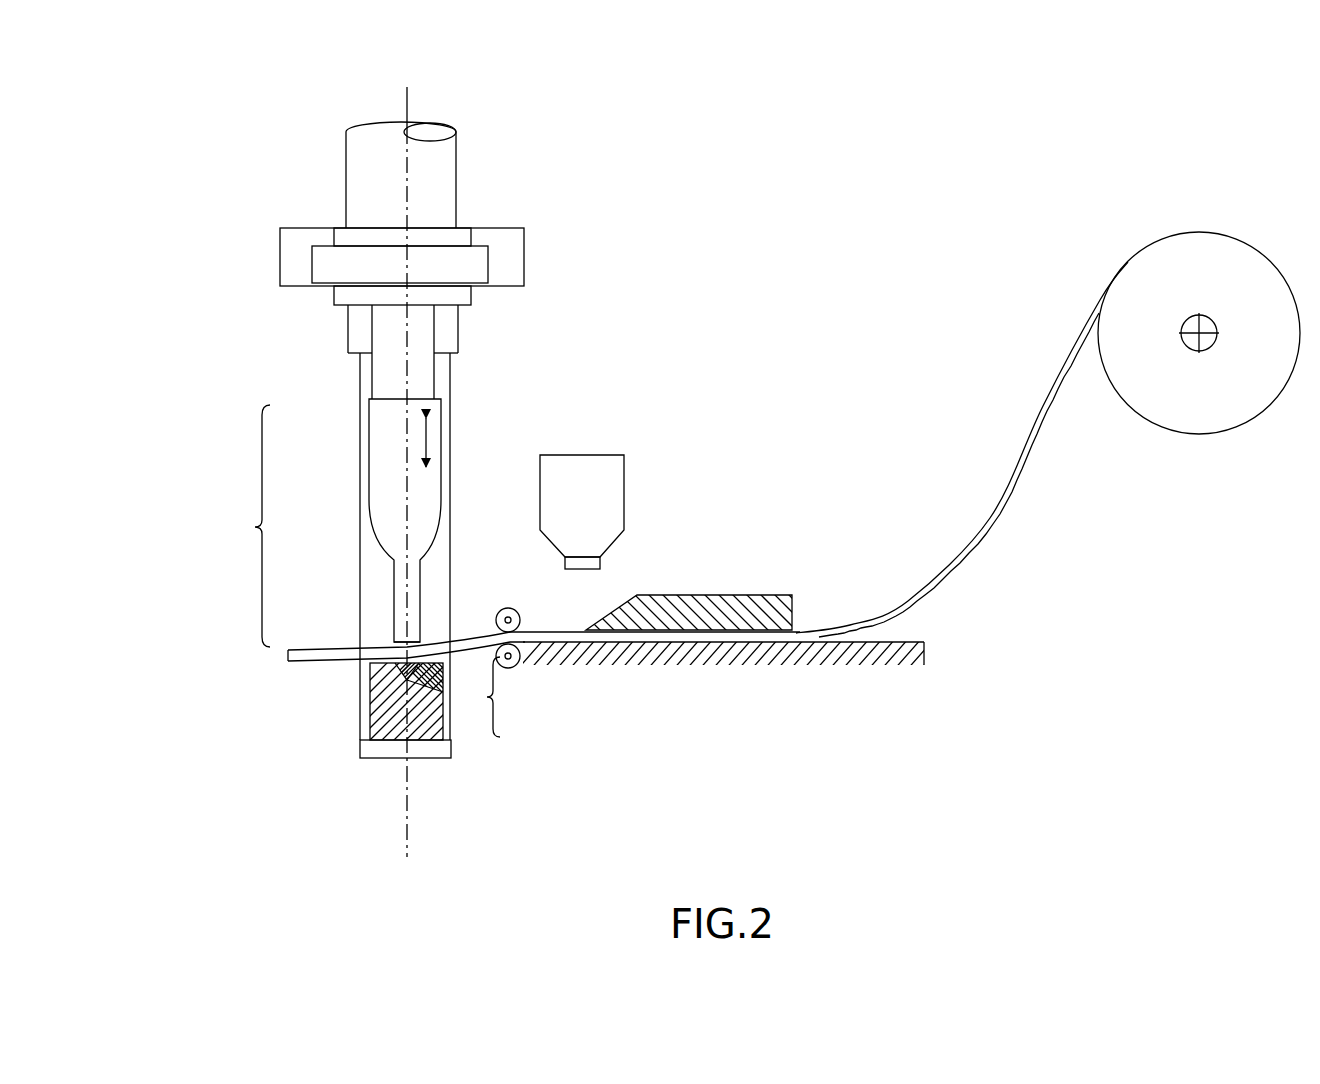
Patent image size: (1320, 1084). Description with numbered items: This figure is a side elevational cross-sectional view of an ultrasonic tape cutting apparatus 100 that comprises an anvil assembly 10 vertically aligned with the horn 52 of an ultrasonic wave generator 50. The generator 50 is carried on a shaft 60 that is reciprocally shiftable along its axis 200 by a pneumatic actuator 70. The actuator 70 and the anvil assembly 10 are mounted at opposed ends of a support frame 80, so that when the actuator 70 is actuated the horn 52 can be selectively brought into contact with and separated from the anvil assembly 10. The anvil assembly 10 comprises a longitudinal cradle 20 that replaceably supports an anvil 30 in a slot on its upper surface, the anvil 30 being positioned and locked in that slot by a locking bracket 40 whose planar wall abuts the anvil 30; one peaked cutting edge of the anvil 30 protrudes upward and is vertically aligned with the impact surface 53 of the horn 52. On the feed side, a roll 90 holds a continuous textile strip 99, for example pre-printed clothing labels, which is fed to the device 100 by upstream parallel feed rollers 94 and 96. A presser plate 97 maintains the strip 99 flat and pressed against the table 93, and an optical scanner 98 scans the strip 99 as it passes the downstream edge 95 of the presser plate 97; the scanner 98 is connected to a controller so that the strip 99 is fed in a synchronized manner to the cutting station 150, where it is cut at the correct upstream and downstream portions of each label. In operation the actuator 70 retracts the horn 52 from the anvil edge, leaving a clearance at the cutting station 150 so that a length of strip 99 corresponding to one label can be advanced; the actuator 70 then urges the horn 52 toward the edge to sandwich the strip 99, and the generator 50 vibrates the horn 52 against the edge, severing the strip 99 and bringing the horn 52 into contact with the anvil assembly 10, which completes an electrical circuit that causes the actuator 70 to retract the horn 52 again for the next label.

The ultrasonic tape cutting apparatus 100 is at (718, 183).
The pneumatic actuator 70 is at (443, 167).
The support frame 80 is at (517, 255).
The axis 200 is at (403, 320).
The shaft 60 is at (423, 372).
The ultrasonic wave generator 50 is at (247, 526).
The horn 52 is at (396, 568).
The impact surface 53 is at (412, 650).
The cutting station 150 is at (348, 633).
The cradle 20 is at (377, 730).
The anvil 30 is at (372, 673).
The locking bracket 40 is at (445, 680).
The anvil assembly 10 is at (506, 697).
The feed roller 94 is at (518, 612).
The feed roller 96 is at (520, 661).
The optical scanner 98 is at (605, 488).
The presser plate 97 is at (698, 597).
The downstream edge 95 is at (585, 628).
The table 93 is at (715, 655).
The textile strip 99 is at (1006, 483).
The roll 90 is at (1218, 246).